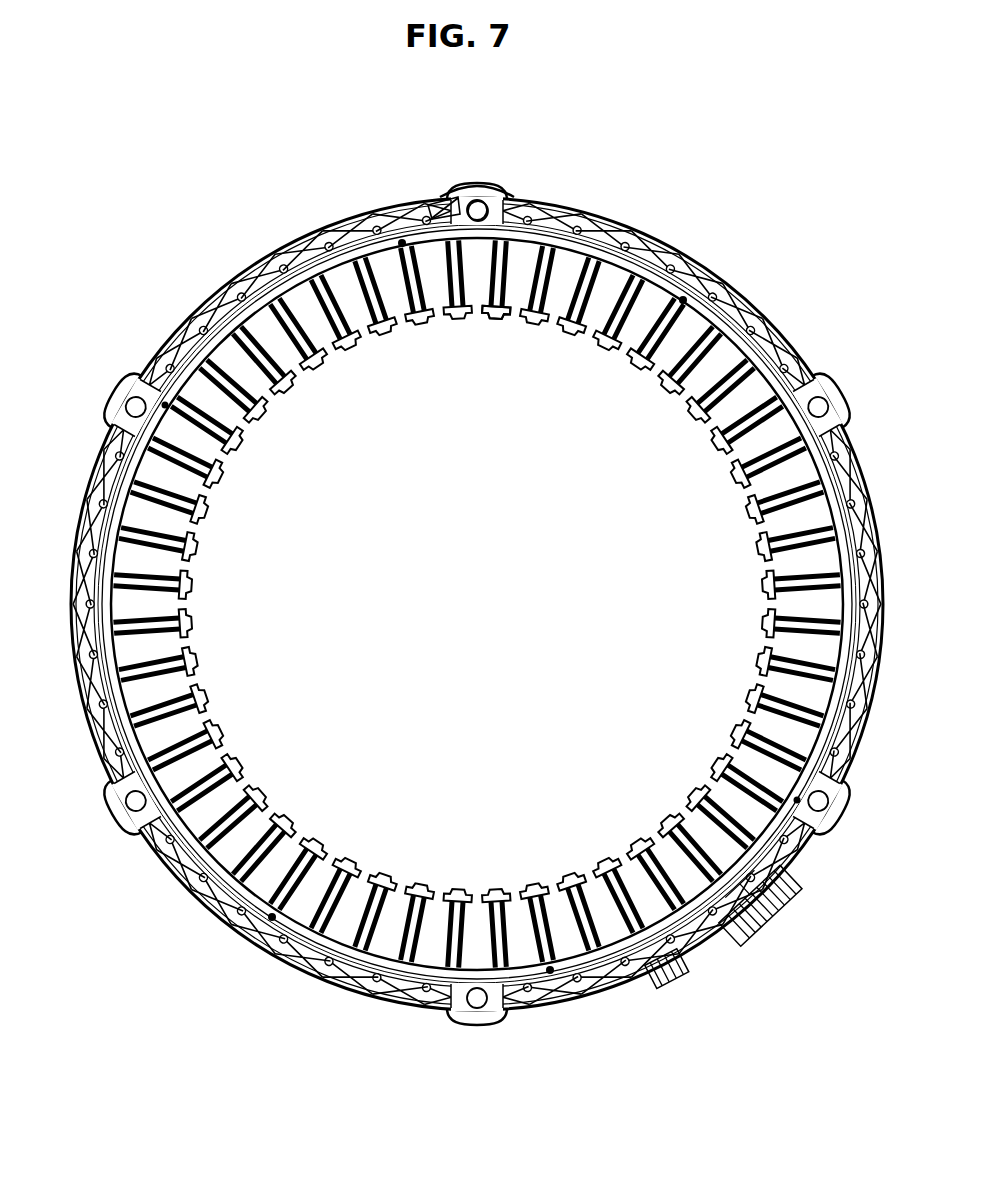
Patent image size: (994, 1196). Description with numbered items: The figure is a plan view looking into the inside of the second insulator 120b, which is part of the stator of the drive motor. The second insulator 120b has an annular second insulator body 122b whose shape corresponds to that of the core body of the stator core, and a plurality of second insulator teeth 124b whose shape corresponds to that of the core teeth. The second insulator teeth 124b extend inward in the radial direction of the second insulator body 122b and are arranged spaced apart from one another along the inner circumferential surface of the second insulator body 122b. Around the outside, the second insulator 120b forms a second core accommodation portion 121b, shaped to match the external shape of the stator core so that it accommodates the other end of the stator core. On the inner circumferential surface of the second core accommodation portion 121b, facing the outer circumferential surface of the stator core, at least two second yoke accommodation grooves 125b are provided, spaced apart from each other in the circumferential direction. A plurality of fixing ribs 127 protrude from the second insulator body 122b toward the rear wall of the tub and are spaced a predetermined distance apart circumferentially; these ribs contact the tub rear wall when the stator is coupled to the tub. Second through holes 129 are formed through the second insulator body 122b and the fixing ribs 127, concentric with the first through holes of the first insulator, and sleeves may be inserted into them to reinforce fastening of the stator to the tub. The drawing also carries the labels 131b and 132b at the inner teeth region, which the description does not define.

The second insulator 120b is at (508, 90).
The second core accommodation portion 121b is at (323, 222).
The second insulator body 122b is at (420, 196).
The second insulator teeth 124b is at (455, 316).
The second yoke accommodation groove 125b is at (108, 446).
The fixing rib 127 is at (463, 196).
The second through hole 129 is at (485, 203).
The insulator 131b is at (566, 248).
The tooth tip 132b is at (490, 322).